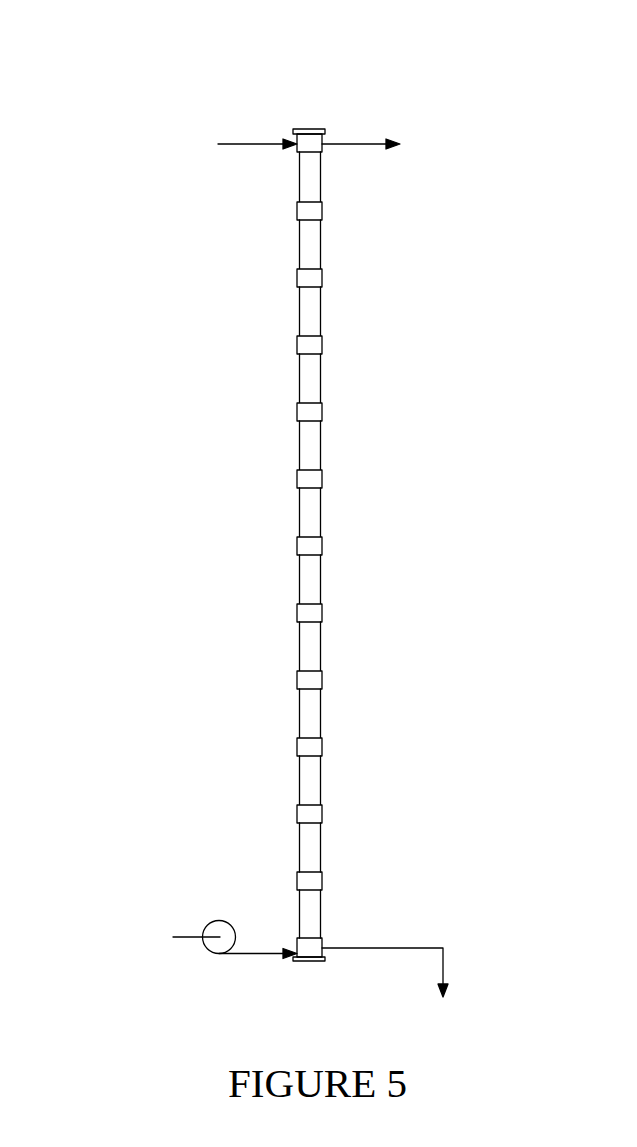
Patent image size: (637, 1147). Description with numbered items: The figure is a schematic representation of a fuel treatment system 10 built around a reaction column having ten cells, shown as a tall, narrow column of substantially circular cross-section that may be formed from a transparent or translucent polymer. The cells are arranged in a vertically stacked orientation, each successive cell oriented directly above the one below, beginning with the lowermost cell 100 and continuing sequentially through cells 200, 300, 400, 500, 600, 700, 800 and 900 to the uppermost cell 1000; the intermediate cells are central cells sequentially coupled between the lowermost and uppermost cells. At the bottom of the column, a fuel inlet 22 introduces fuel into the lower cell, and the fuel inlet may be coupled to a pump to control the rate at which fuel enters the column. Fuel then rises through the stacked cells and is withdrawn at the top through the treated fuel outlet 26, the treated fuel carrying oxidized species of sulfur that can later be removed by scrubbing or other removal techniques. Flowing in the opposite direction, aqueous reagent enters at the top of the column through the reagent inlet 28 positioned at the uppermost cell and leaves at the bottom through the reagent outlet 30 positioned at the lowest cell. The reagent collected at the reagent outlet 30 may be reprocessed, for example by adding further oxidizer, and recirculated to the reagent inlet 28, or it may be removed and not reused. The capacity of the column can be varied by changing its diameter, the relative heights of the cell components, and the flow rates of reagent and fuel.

The system 10 is at (96, 40).
The fuel inlet 22 is at (218, 900).
The treated fuel outlet 26 is at (351, 132).
The reagent inlet 28 is at (249, 132).
The reagent outlet 30 is at (446, 965).
The cell 100 is at (320, 846).
The cell 200 is at (320, 779).
The cell 300 is at (320, 712).
The cell 400 is at (320, 645).
The cell 500 is at (320, 578).
The cell 600 is at (320, 511).
The cell 700 is at (320, 444).
The cell 800 is at (320, 377).
The cell 900 is at (320, 310).
The cell 1000 is at (320, 243).